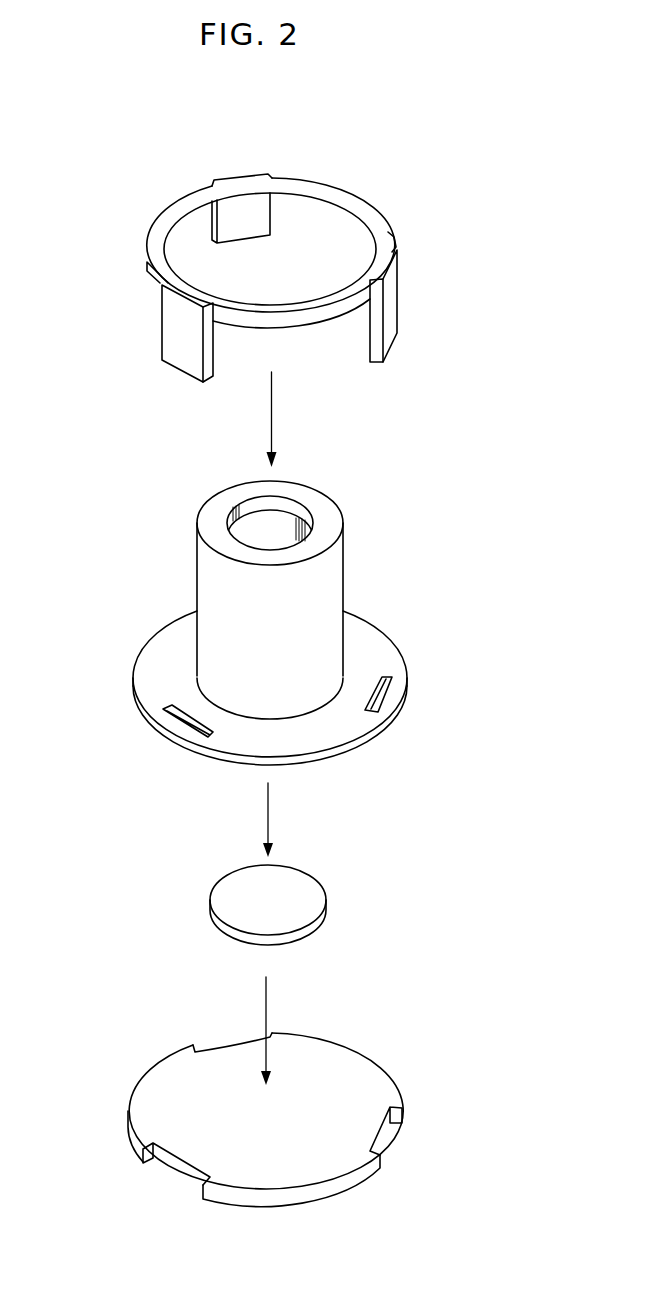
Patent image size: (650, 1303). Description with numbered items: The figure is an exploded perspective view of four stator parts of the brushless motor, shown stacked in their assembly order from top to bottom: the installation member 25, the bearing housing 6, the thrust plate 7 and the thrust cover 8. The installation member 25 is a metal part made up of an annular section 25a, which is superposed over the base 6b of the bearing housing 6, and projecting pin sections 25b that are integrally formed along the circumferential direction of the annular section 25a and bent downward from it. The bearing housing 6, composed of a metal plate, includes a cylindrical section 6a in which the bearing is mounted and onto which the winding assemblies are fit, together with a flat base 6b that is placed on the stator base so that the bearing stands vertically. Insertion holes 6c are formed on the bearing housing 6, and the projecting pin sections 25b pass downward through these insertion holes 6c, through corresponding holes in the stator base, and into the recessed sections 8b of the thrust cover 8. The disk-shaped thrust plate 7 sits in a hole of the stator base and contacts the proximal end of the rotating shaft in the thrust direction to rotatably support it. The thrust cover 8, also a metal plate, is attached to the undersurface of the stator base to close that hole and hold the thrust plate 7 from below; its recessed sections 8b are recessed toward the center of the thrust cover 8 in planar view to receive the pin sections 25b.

The installation member 25 is at (294, 257).
The annular section 25a is at (165, 217).
The projecting pin section 25b is at (395, 315).
The bearing housing 6 is at (281, 623).
The cylindrical section 6a is at (213, 590).
The base 6b is at (388, 655).
The insertion hole 6c is at (182, 710).
The thrust plate 7 is at (302, 895).
The thrust cover 8 is at (271, 1128).
The recessed section 8b is at (170, 1163).